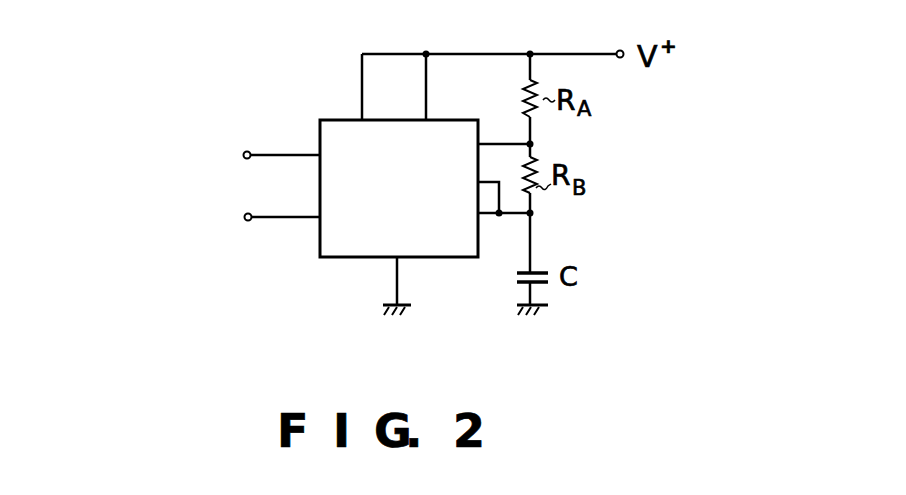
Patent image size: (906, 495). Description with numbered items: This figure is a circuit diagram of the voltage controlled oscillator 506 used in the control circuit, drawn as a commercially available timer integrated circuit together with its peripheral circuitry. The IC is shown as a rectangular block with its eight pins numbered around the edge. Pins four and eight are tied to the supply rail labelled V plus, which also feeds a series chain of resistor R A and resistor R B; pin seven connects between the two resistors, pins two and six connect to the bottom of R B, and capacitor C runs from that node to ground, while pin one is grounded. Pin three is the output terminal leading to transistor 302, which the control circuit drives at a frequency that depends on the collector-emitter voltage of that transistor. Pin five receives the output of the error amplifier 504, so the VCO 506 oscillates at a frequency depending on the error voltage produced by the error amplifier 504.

The voltage controlled oscillator 506 is at (351, 94).
The transistor 302 is at (175, 135).
The error amplifier 504 is at (176, 213).